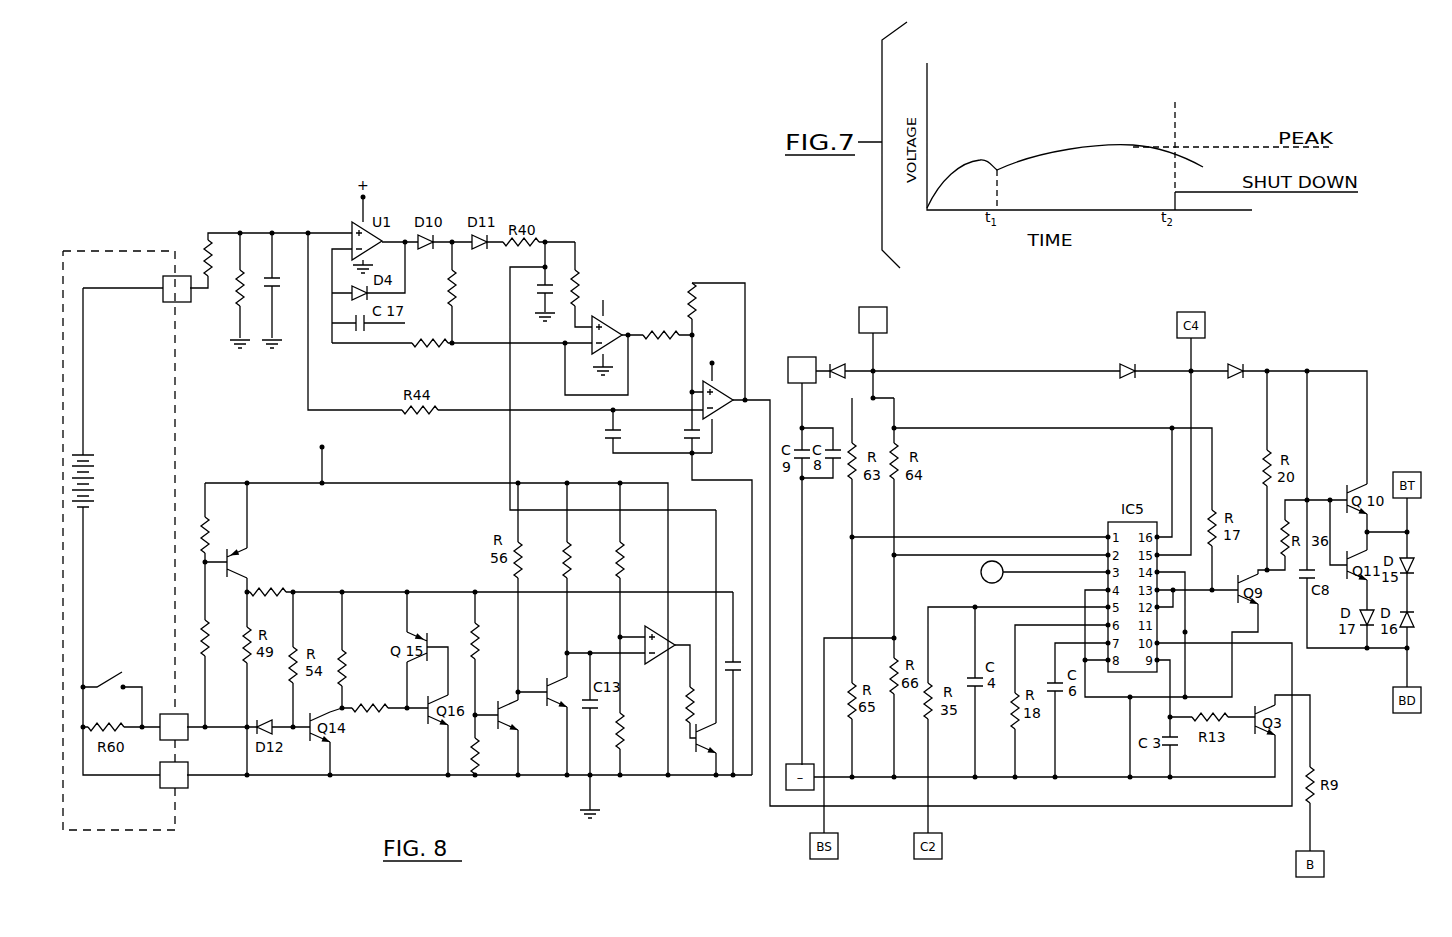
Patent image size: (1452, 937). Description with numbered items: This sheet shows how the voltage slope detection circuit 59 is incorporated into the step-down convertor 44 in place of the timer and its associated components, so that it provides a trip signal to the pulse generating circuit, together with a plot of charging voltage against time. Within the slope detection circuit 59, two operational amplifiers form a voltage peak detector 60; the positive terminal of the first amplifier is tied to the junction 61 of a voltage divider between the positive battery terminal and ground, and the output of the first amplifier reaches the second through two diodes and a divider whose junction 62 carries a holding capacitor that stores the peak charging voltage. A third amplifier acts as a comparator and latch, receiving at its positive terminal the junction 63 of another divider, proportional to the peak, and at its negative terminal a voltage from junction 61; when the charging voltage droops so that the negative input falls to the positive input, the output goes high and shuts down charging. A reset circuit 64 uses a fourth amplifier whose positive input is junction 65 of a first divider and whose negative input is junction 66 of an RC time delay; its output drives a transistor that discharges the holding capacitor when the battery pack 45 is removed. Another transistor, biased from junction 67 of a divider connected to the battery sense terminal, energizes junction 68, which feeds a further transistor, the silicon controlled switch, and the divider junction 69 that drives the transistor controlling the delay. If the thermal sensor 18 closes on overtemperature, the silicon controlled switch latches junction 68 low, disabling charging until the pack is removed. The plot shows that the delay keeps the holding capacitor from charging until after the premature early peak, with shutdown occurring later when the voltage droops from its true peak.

The thermal sensor 18 is at (105, 681).
The step-down convertor 44 is at (1000, 364).
The battery pack 45 is at (103, 251).
The voltage slope detection circuit 59 is at (612, 280).
The voltage peak detector 60 is at (437, 312).
The junction between resistors R37 and R38 61 is at (240, 232).
The junction between resistors R40 and R41 62 is at (546, 241).
The junction between resistors R42 and R43 63 is at (699, 337).
The reset circuit 64 is at (249, 483).
The junction of first voltage divider 65 is at (620, 637).
The junction between resistor R47 and capacitor C13 66 is at (567, 653).
The junction between resistors R50 and R51 67 is at (205, 562).
The junction 68 is at (342, 591).
The junction between resistors R57 and R58 69 is at (476, 712).